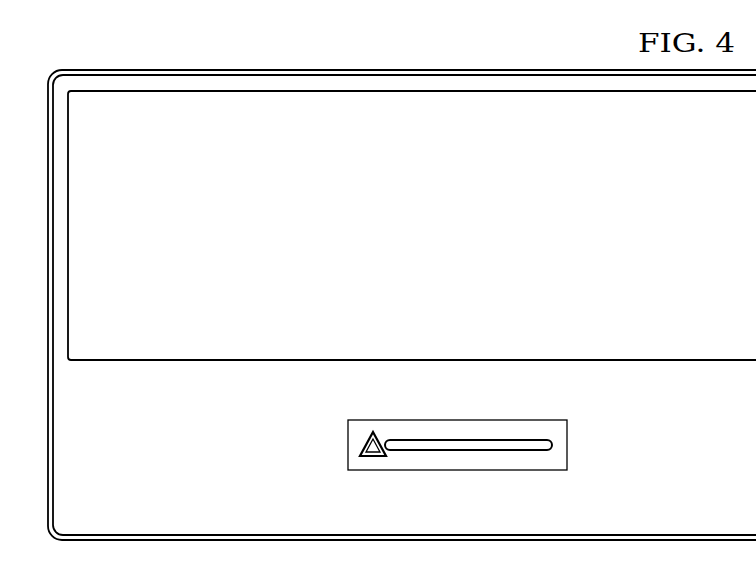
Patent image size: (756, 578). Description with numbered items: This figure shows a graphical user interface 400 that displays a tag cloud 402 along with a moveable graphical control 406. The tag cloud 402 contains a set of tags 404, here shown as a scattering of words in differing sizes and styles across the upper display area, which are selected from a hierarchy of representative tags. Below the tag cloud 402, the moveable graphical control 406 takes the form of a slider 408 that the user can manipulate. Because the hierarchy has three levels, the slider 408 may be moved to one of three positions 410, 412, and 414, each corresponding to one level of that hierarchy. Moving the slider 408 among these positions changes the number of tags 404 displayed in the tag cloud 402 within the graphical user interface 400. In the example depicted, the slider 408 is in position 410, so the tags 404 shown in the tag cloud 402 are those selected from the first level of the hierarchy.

The graphical user interface 400 is at (176, 69).
The tag cloud 402 is at (527, 100).
The tags 404 is at (286, 150).
The moveable graphical control 406 is at (358, 443).
The slider 408 is at (370, 460).
The position 410 is at (369, 429).
The position 412 is at (571, 447).
The position 414 is at (539, 456).